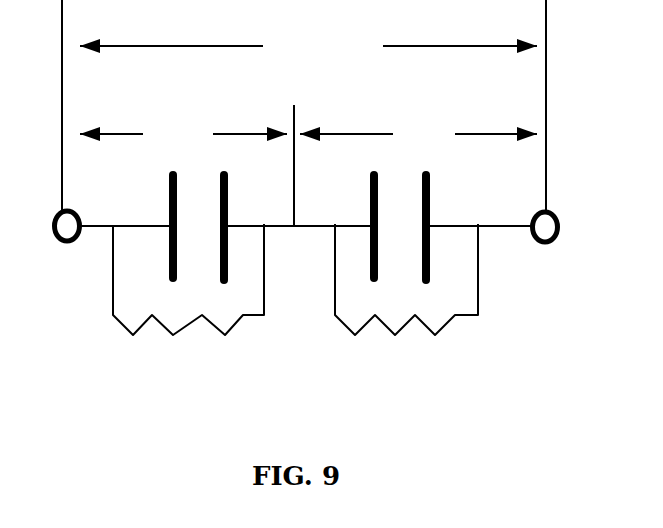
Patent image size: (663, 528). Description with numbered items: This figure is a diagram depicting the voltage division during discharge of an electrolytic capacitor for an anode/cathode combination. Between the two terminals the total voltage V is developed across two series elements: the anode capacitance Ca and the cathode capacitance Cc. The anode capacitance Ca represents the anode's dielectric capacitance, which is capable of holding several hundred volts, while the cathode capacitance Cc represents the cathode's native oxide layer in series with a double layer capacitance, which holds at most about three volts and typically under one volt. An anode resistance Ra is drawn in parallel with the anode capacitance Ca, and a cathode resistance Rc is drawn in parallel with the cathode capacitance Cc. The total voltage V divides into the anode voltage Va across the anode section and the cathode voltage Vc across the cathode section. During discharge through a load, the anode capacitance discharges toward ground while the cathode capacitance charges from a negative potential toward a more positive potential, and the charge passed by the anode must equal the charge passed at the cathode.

The total voltage V is at (308, 46).
The anode voltage Va is at (183, 117).
The cathode voltage Vc is at (418, 117).
The anode capacitance Ca is at (163, 223).
The cathode capacitance Cc is at (435, 223).
The anode resistance Ra is at (188, 300).
The cathode resistance Rc is at (406, 300).